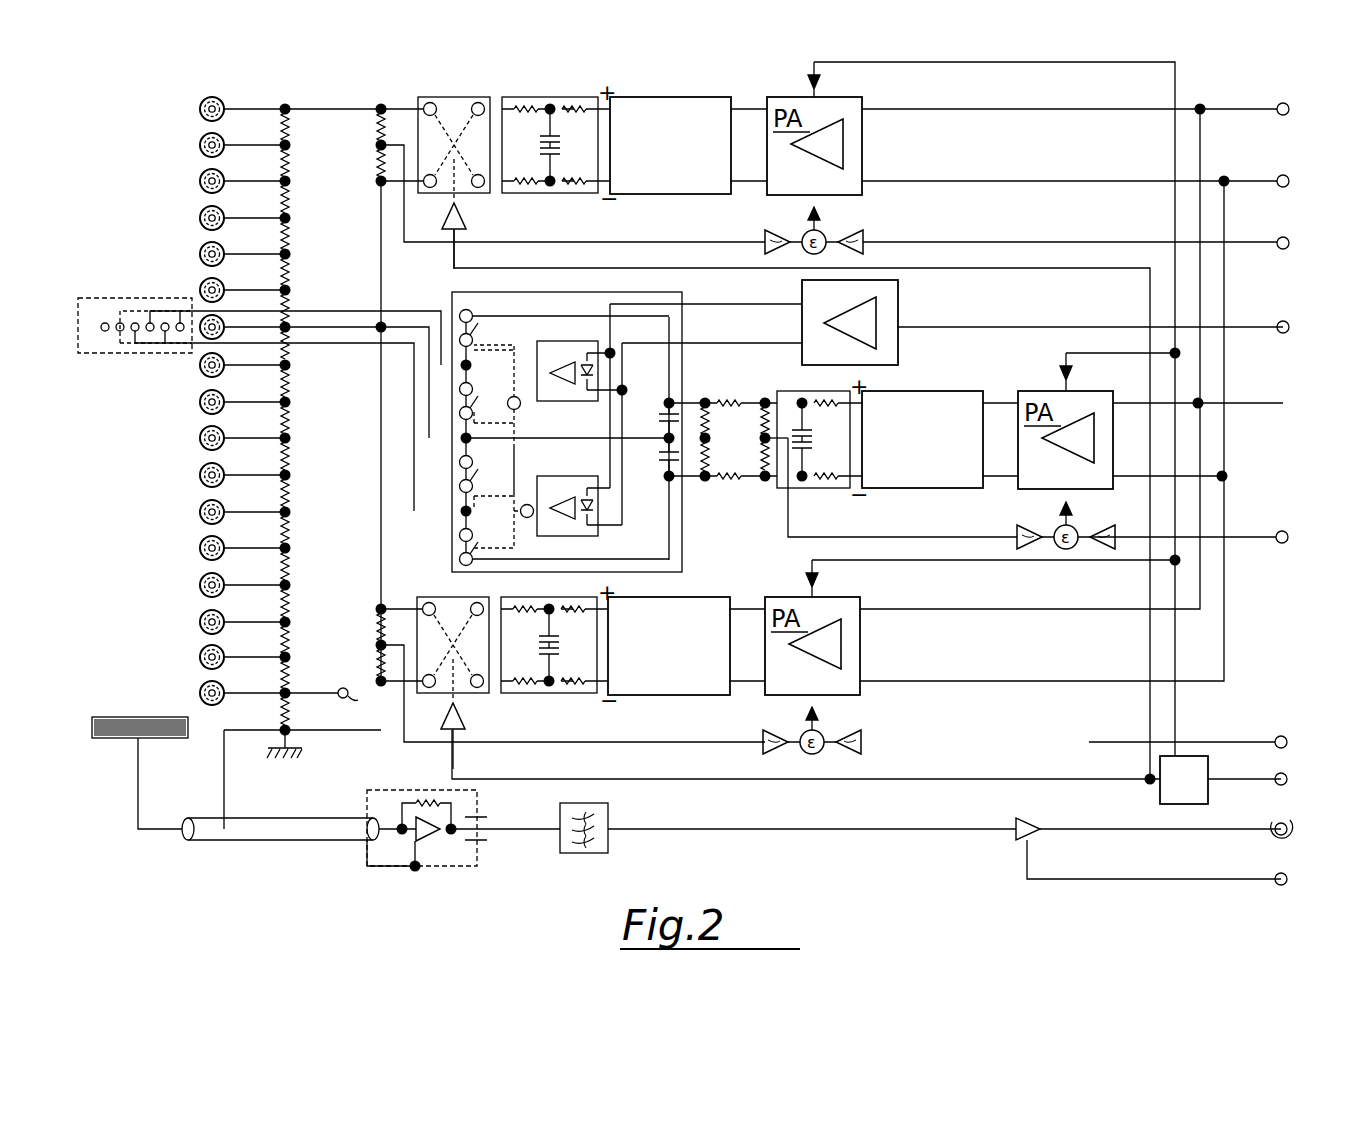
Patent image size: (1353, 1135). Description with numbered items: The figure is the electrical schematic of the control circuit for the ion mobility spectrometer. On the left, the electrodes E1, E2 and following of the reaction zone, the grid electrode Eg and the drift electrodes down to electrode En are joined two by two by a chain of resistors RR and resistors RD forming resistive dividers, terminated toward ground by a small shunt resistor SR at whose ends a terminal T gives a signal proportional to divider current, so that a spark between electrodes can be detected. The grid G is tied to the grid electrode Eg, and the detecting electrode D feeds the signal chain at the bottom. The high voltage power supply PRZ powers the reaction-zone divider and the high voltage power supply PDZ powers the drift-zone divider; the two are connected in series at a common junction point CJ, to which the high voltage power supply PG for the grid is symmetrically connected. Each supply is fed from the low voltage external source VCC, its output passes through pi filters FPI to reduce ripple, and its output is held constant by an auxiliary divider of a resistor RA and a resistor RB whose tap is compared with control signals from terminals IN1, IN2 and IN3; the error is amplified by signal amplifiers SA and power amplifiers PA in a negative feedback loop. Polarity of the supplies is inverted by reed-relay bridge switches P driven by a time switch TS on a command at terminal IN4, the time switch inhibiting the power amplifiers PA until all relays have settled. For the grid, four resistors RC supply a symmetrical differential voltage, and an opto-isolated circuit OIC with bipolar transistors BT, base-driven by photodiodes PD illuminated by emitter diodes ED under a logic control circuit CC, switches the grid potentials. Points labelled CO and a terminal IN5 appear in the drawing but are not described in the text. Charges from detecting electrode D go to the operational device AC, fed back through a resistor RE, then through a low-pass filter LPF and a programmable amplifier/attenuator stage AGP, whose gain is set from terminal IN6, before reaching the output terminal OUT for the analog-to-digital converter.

The electrode E1 is at (200, 108).
The electrode E2 is at (200, 144).
The grid electrode Eg is at (200, 321).
The electrode En is at (200, 692).
The grid G is at (124, 298).
The detecting electrode D is at (152, 722).
The resistors RR is at (284, 302).
The resistors RD is at (286, 666).
The shunt resistor SR is at (284, 702).
The terminal T is at (330, 707).
The resistor RA is at (762, 402).
The resistor RB is at (762, 438).
The common junction point CJ is at (378, 323).
The controlled switches P is at (452, 604).
The pi filters FPI is at (570, 710).
The high voltage power supply PRZ is at (694, 160).
The high voltage power supply PDZ is at (695, 660).
The power amplifiers PA is at (921, 378).
The signal amplifiers SA is at (1110, 525).
The opto-isolated circuit OIC is at (456, 299).
The bipolar transistors BT is at (478, 535).
The photodiodes PD is at (544, 525).
The emitter diodes ED is at (582, 496).
The coupling capacitor node CO is at (663, 483).
The resistors RC is at (704, 478).
The logic control circuit CC is at (844, 319).
The high voltage power supply PG is at (942, 454).
The time switch TS is at (1198, 792).
The resistor RE is at (428, 800).
The operational device AC is at (431, 836).
The low-pass filter LPF is at (562, 854).
The amplifier/attenuator stage AGP is at (1024, 838).
The continuous low voltage external source VCC is at (1303, 141).
The terminal IN1 is at (1288, 237).
The terminal IN2 is at (1286, 736).
The terminal IN3 is at (1287, 531).
The terminal IN4 is at (1286, 773).
The input 5 IN5 is at (1288, 321).
The terminal IN6 is at (1286, 873).
The terminal OUT is at (1286, 823).